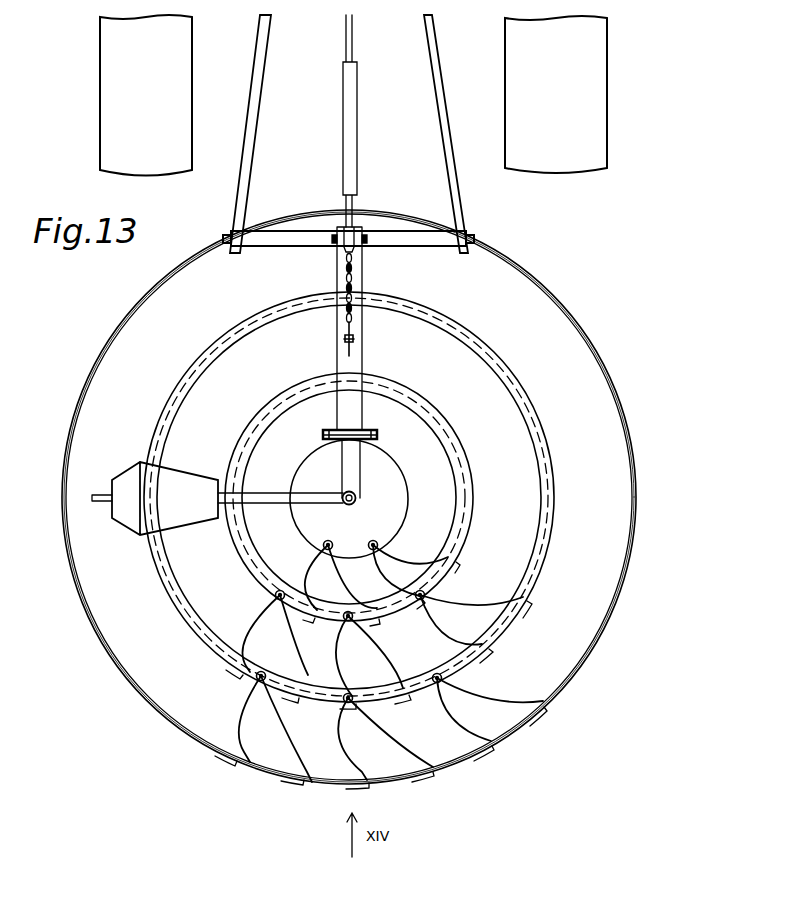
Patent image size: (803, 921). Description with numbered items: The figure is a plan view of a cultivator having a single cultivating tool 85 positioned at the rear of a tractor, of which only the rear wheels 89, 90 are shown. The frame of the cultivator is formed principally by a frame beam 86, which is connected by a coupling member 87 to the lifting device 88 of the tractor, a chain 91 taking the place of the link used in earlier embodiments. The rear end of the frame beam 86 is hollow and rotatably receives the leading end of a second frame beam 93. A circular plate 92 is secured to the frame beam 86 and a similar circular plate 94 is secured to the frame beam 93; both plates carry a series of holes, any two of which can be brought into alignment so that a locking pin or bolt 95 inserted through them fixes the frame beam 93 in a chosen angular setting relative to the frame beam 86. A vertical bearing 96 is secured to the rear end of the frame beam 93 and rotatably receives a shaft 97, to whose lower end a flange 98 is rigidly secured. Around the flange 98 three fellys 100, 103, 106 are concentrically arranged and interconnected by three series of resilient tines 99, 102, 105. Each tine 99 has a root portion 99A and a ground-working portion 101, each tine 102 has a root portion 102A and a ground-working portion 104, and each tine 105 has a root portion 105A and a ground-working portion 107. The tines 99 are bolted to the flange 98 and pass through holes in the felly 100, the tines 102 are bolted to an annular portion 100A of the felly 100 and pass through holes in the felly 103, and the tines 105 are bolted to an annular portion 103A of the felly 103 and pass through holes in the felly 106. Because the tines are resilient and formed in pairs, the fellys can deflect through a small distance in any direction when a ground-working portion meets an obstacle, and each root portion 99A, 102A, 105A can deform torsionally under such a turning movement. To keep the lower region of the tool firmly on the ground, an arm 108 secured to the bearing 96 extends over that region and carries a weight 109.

The cultivating tool 85 is at (571, 299).
The frame beam 86 is at (362, 357).
The coupling member 87 is at (290, 247).
The lifting device 88 is at (305, 67).
The rear wheel 89 is at (180, 118).
The rear wheel 90 is at (510, 90).
The chain 91 is at (351, 279).
The circular plate 92 is at (370, 430).
The frame beam 93 is at (360, 467).
The circular plate 94 is at (380, 441).
The locking pin or bolt 95 is at (332, 430).
The vertical bearing 96 is at (357, 498).
The shaft 97 is at (345, 505).
The flange 98 is at (303, 524).
The tine 99 is at (400, 563).
The root portion 99A is at (385, 582).
The felly 100 is at (478, 545).
The annular portion 100A is at (483, 509).
The ground-working portion 101 is at (458, 576).
The tine 102 is at (463, 604).
The root portion 102A is at (447, 644).
The felly 103 is at (550, 562).
The annular portion 103A is at (552, 520).
The ground-working portion 104 is at (536, 605).
The tine 105 is at (495, 700).
The root portion 105A is at (462, 723).
The felly 106 is at (585, 665).
The ground-working portion 107 is at (547, 718).
The arm 108 is at (272, 495).
The weight 109 is at (185, 475).